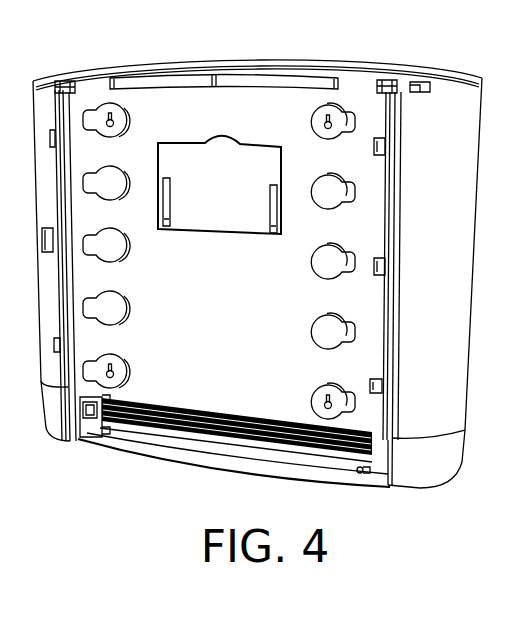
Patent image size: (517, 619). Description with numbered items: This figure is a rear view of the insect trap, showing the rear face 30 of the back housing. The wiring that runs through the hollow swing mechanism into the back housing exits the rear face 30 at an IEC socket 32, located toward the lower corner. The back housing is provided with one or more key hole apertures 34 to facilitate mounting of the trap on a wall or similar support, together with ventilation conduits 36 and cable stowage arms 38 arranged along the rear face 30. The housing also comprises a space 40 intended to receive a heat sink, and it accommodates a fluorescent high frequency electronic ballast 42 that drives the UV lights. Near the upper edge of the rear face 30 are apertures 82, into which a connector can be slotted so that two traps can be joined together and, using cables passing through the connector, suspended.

The rear face 30 is at (228, 342).
The IEC socket 32 is at (73, 437).
The key hole apertures 34 is at (312, 121).
The ventilation conduits 36 is at (352, 188).
The cable stowage arms 38 is at (352, 257).
The space for a heat sink 40 is at (207, 441).
The fluorescent high frequency electronic ballast 42 is at (368, 443).
The apertures 82 is at (65, 86).